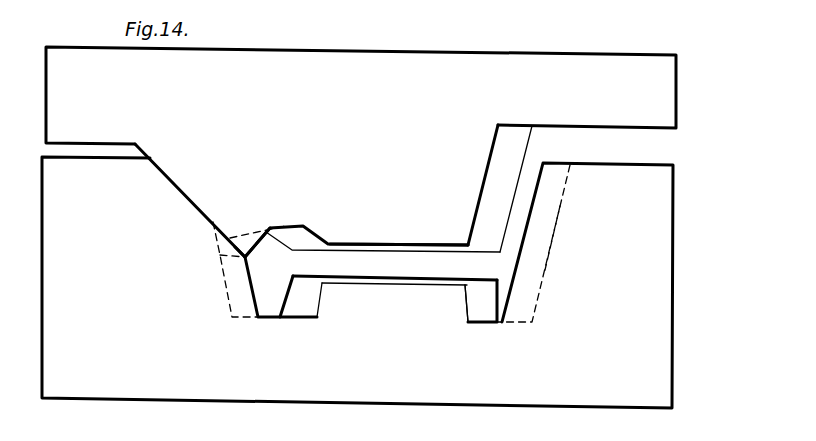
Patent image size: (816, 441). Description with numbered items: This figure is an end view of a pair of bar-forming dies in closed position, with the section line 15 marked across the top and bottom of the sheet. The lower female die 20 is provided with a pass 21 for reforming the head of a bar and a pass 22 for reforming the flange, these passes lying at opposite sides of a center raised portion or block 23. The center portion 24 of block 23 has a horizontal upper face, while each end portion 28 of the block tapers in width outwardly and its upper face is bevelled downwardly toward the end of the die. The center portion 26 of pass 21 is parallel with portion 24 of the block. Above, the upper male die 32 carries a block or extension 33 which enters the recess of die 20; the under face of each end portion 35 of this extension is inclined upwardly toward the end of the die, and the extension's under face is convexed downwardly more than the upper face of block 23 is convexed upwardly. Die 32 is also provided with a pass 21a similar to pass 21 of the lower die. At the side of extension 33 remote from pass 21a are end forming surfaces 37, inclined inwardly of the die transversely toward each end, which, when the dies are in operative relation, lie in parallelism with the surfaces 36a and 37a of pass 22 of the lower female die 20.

The section line 15 is at (372, 30).
The lower female die 20 is at (652, 335).
The pass 21 is at (268, 310).
The pass 21a is at (268, 240).
The pass 22 is at (502, 315).
The center raised portion or block 23 is at (335, 308).
The center portion 24 is at (388, 277).
The center portion 26 is at (227, 293).
The end portion 28 is at (457, 282).
The upper male die 32 is at (540, 87).
The block or extension 33 is at (400, 230).
The end portion 35 is at (335, 245).
The surface 36a is at (555, 238).
The end forming surface 37 is at (505, 168).
The surface 37a is at (508, 268).